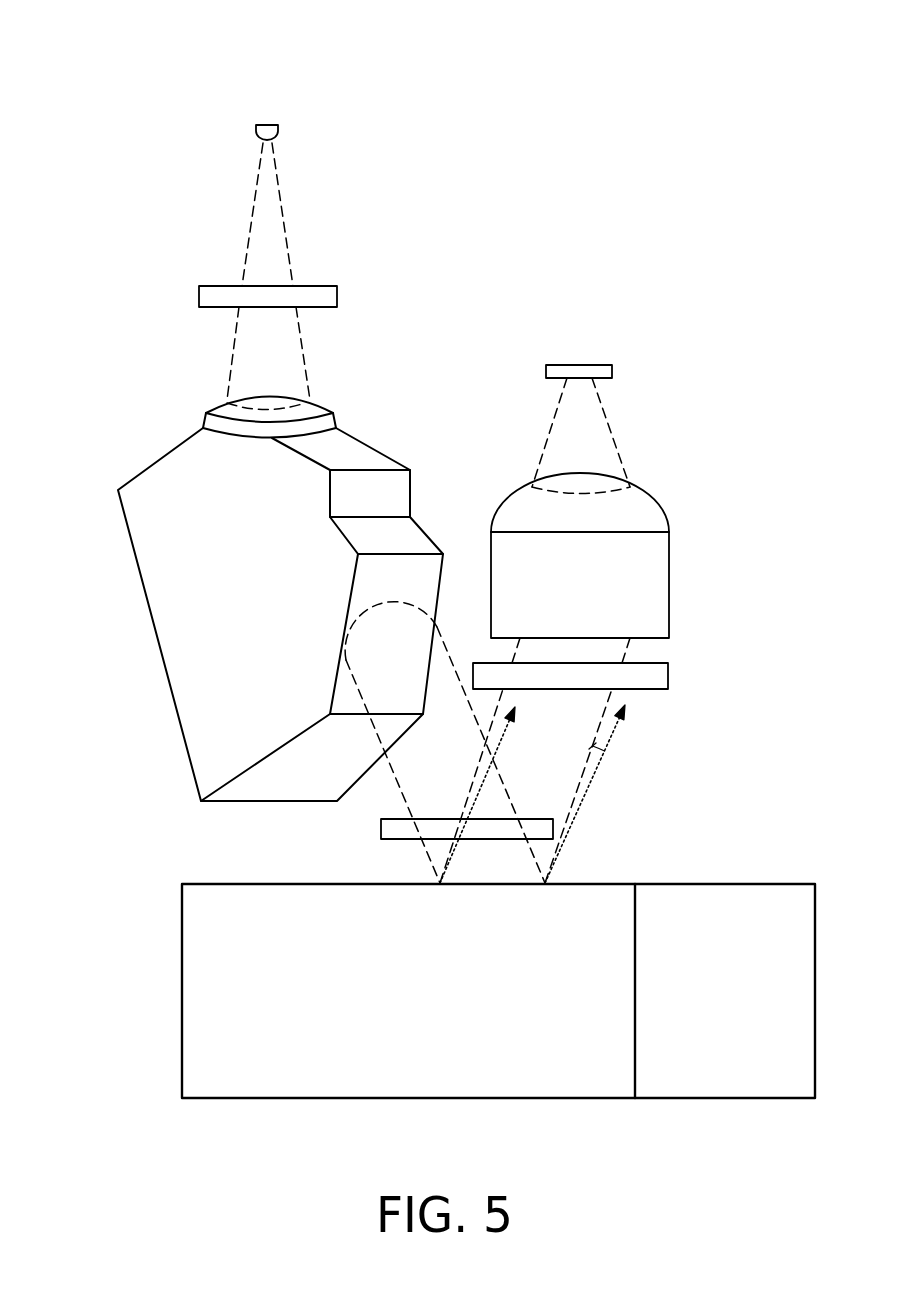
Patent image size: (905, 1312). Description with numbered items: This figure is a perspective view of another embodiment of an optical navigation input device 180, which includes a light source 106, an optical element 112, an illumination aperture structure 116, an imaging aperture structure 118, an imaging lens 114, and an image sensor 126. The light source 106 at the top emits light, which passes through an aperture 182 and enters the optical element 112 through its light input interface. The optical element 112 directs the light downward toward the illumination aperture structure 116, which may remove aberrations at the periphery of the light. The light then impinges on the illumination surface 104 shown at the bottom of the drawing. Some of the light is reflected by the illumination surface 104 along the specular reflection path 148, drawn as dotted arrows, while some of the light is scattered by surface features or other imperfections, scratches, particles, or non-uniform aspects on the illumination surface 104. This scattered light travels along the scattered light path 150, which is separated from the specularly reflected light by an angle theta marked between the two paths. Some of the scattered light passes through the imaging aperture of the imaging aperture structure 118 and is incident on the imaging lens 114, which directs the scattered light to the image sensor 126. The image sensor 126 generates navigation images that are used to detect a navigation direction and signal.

The optical navigation input device 180 is at (175, 56).
The light source 106 is at (275, 131).
The aperture 182 is at (199, 292).
The optical element 112 is at (147, 608).
The illumination aperture structure 116 is at (381, 827).
The image sensor 126 is at (607, 365).
The imaging lens 114 is at (669, 562).
The imaging aperture structure 118 is at (668, 677).
The scattered light path 150 is at (575, 797).
The specular reflection path 148 is at (570, 825).
The illumination surface 104 is at (777, 884).